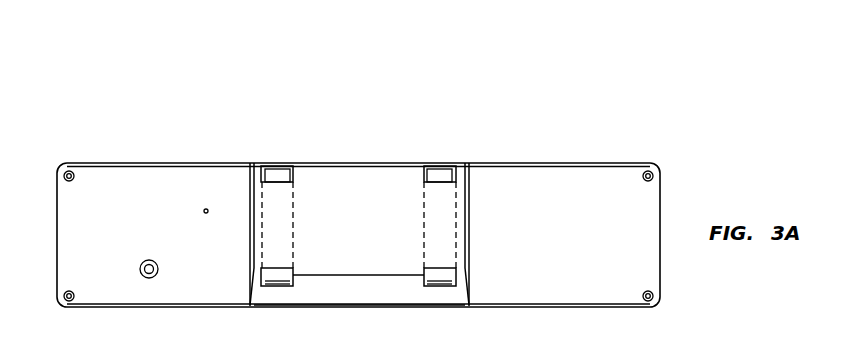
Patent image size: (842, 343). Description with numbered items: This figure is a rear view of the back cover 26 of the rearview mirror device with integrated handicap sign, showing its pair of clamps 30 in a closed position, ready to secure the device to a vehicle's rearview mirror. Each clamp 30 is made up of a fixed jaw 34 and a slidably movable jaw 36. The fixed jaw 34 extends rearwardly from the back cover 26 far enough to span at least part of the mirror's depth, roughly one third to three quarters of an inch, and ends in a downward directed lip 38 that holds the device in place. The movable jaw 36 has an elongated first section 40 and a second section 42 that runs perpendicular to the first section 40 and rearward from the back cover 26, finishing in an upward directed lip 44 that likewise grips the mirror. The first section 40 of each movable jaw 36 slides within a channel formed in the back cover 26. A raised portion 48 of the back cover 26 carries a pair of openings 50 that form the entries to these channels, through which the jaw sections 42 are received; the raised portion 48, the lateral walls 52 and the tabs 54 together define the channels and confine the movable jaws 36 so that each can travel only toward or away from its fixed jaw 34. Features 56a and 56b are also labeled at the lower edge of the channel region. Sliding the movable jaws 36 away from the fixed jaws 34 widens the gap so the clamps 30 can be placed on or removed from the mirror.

The back cover 26 is at (643, 163).
The clamp 30 is at (285, 143).
The fixed jaw 34 is at (275, 172).
The movable jaw 36 is at (270, 228).
The downward directed lip 38 is at (278, 180).
The first section 40 is at (280, 212).
The second section 42 is at (265, 282).
The upward directed lip 44 is at (278, 268).
The raised portion 48 is at (377, 192).
The opening 50 is at (280, 286).
The lateral wall 52 is at (354, 336).
The tab 54 is at (358, 309).
The first tab 56a is at (418, 334).
The second tab 56b is at (468, 334).